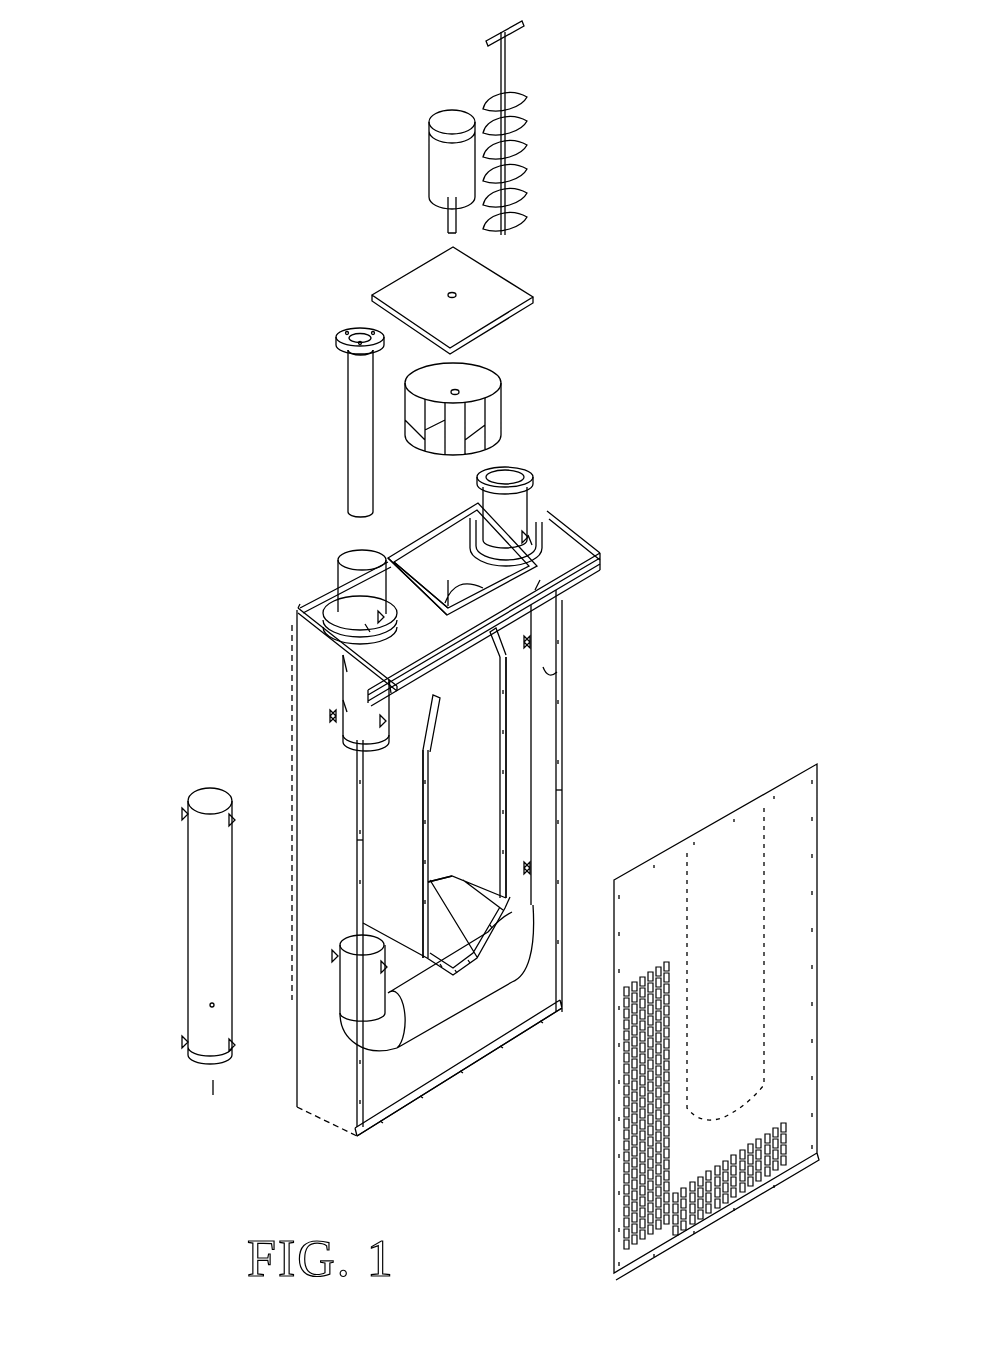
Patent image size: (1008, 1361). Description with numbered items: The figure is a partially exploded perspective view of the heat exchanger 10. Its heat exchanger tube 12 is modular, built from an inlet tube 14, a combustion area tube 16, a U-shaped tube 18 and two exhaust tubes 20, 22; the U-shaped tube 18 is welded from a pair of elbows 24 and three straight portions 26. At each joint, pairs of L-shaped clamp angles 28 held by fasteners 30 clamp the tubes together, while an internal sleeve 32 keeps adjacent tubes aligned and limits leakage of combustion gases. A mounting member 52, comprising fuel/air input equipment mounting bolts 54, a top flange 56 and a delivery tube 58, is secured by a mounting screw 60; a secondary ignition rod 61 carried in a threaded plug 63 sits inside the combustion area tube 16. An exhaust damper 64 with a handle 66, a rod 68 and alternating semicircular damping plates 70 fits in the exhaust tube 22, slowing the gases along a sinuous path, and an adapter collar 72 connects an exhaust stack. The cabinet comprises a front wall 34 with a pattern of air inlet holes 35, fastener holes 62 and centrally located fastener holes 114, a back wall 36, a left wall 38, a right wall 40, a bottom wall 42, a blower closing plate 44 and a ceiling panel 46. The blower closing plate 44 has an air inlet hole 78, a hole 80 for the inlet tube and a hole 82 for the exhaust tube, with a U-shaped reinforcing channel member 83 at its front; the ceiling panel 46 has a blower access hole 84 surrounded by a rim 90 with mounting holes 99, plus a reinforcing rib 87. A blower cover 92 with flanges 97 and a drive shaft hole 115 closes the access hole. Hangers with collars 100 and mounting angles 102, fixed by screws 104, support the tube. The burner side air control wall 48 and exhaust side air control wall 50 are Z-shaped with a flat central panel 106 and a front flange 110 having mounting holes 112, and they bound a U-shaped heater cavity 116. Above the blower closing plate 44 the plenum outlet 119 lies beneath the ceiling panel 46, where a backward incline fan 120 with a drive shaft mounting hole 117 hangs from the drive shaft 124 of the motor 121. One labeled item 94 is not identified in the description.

The heat exchanger 10 is at (142, 478).
The heat exchanger tube 12 is at (135, 674).
The inlet tube 14 is at (347, 588).
The combustion area tube 16 is at (195, 895).
The U-shaped tube 18 is at (455, 1046).
The exhaust tube 20 is at (522, 847).
The exhaust tube 22 is at (530, 500).
The elbow 24 is at (510, 960).
The straight portion 26 is at (522, 910).
The L-shaped clamp angle 28 is at (333, 717).
The fastener 30 is at (350, 705).
The internal sleeve 32 is at (317, 810).
The front wall 34 is at (708, 1024).
The air inlet holes 35 is at (600, 1258).
The back wall 36 is at (443, 737).
The left wall 38 is at (300, 827).
The right wall 40 is at (543, 667).
The bottom wall 42 is at (483, 1030).
The blower closing plate 44 is at (360, 697).
The ceiling panel 46 is at (577, 567).
The burner side air control wall 48 is at (430, 873).
The exhaust side air control wall 50 is at (558, 792).
The mounting member 52 is at (308, 406).
The fuel/air input equipment mounting bolts 54 is at (348, 334).
The top flange 56 is at (348, 338).
The delivery tube 58 is at (350, 436).
The mounting screw 60 is at (348, 352).
The secondary ignition rod 61 is at (215, 1085).
The fastener holes 62 is at (558, 716).
The threaded plug 63 is at (212, 1095).
The exhaust damper 64 is at (548, 76).
The handle 66 is at (523, 27).
The rod 68 is at (501, 60).
The semicircular damping plates 70 is at (520, 173).
The adapter collar 72 is at (522, 466).
The air inlet hole 78 is at (355, 583).
The hole for the inlet tube 80 is at (343, 673).
The hole for the exhaust tube 82 is at (390, 560).
The U-shaped reinforcing channel member 83 is at (547, 593).
The blower access hole 84 is at (390, 568).
The reinforcing rib 87 is at (570, 577).
The rim 90 is at (583, 537).
The blower cover 92 is at (380, 240).
The plate corner 94 is at (297, 614).
The flanges 97 is at (372, 292).
The mounting holes 99 is at (475, 533).
The collar 100 is at (540, 517).
The mounting angles 102 is at (533, 530).
The screw 104 is at (485, 530).
The flat central panel 106 is at (387, 837).
The flat front flange 110 is at (503, 770).
The mounting holes 112 is at (503, 707).
The centrally located fastener holes 114 is at (767, 998).
The drive shaft hole 115 is at (456, 294).
The U-shaped heater cavity 116 is at (410, 1075).
The drive shaft mounting hole 117 is at (459, 391).
The outlet 119 is at (333, 713).
The backward incline fan 120 is at (495, 395).
The motor 121 is at (437, 155).
The drive shaft 124 is at (450, 207).